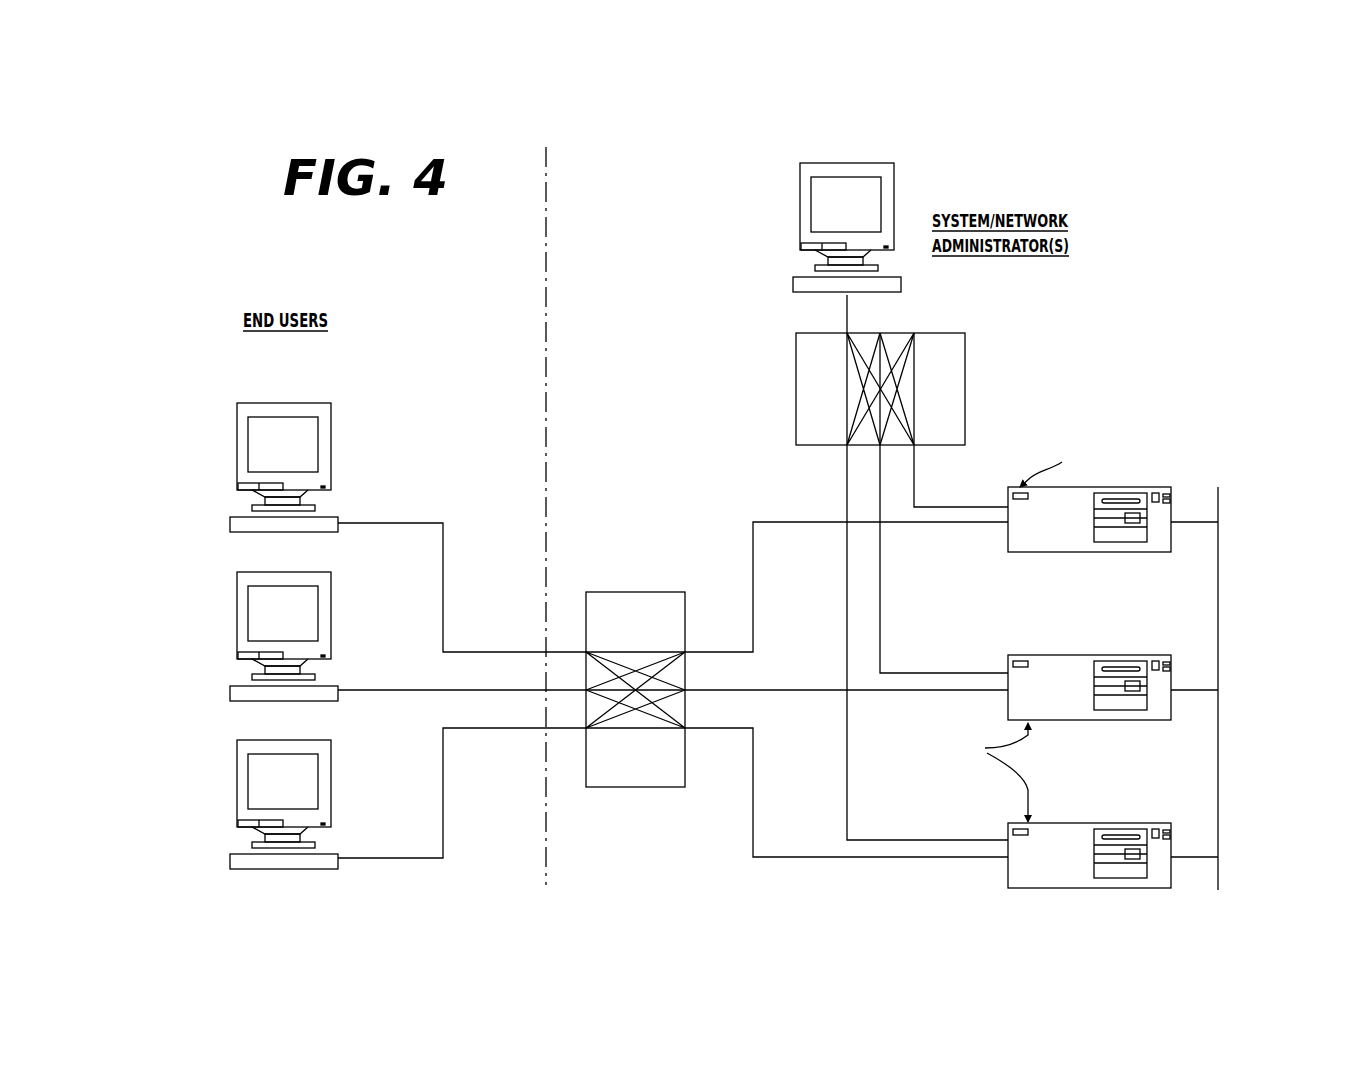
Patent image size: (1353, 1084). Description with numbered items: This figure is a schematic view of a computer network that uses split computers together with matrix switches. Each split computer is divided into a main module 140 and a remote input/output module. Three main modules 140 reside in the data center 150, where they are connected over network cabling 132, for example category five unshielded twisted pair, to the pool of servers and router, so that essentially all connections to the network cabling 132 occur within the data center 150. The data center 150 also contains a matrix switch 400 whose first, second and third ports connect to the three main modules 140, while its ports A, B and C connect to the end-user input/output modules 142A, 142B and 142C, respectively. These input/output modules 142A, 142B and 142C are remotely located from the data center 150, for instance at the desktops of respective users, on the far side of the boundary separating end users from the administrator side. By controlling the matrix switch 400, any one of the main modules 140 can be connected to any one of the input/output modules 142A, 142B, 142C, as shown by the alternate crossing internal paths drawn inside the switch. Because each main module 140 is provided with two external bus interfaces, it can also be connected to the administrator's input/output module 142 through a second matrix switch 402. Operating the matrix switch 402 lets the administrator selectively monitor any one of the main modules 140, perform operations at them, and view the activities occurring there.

The input/output module 142A is at (340, 516).
The input/output module 142B is at (340, 685).
The input/output module 142C is at (340, 853).
The administrator's input/output module 142 is at (793, 283).
The data center 150 is at (546, 348).
The matrix switch 400 is at (637, 787).
The second matrix switch 402 is at (965, 347).
The main module 140 is at (967, 900).
The network cabling 132 is at (1218, 568).